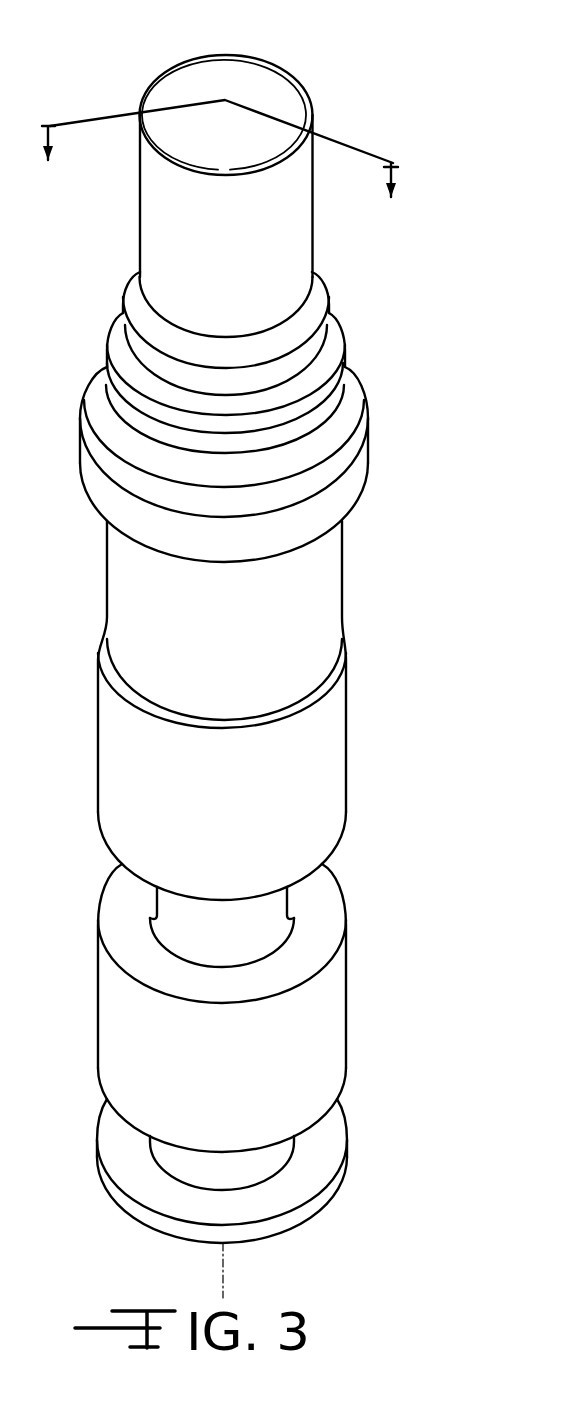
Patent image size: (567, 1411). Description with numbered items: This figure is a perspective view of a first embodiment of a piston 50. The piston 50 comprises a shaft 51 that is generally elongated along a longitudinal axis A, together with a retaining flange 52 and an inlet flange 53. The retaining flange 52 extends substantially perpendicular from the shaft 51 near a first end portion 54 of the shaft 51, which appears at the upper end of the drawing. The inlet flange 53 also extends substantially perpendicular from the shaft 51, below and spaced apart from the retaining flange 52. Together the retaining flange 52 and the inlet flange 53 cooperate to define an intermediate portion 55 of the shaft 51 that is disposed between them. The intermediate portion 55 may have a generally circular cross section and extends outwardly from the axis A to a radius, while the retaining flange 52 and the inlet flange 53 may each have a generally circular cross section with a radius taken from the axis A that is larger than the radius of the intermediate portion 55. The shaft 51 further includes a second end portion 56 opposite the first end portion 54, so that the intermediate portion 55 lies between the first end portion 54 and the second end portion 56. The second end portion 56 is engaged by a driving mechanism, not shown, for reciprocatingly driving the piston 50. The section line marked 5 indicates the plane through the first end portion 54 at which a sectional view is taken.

The piston 50 is at (258, 40).
The shaft 51 is at (345, 707).
The retaining flange 52 is at (105, 348).
The inlet flange 53 is at (370, 447).
The first end portion 54 is at (280, 97).
The intermediate portion 55 is at (161, 454).
The second end portion 56 is at (345, 1012).
The section line 5- 5 is at (220, 148).
The longitudinal axis A is at (225, 1283).